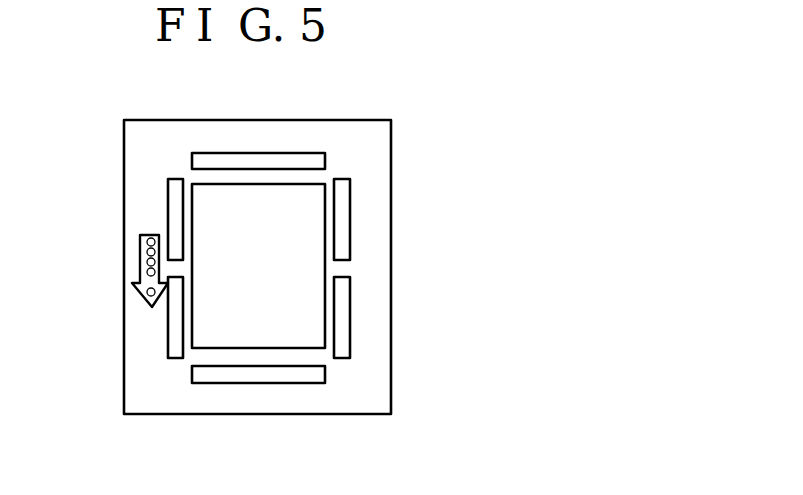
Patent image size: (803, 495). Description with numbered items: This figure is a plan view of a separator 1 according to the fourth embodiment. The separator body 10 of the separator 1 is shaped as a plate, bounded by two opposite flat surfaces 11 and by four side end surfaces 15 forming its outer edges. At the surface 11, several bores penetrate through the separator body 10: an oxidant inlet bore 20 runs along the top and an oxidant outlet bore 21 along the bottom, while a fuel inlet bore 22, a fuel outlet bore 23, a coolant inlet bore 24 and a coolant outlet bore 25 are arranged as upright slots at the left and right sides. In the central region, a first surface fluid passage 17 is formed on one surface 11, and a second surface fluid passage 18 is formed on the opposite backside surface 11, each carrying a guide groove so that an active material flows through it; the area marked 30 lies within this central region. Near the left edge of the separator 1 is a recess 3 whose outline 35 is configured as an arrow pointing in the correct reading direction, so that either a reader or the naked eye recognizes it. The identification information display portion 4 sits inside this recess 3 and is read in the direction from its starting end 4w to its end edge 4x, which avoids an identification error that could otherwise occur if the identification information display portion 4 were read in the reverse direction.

The separator 1 is at (392, 161).
The recess 3 is at (140, 252).
The identification information display portion 4 is at (145, 277).
The starting end 4w is at (147, 233).
The end edge 4x is at (165, 296).
The separator body 10 is at (384, 186).
The flat surface 11 is at (147, 157).
The side end surface 15 is at (328, 120).
The first surface fluid passage 17 is at (300, 271).
The second surface fluid passage 18 is at (300, 271).
The oxidant inlet bore 20 is at (262, 158).
The oxidant outlet bore 21 is at (267, 383).
The fuel inlet bore 22 is at (176, 346).
The fuel outlet bore 23 is at (342, 215).
The coolant inlet bore 24 is at (177, 198).
The coolant outlet bore 25 is at (343, 311).
The inner frame 30 is at (193, 268).
The outline 35 is at (138, 262).